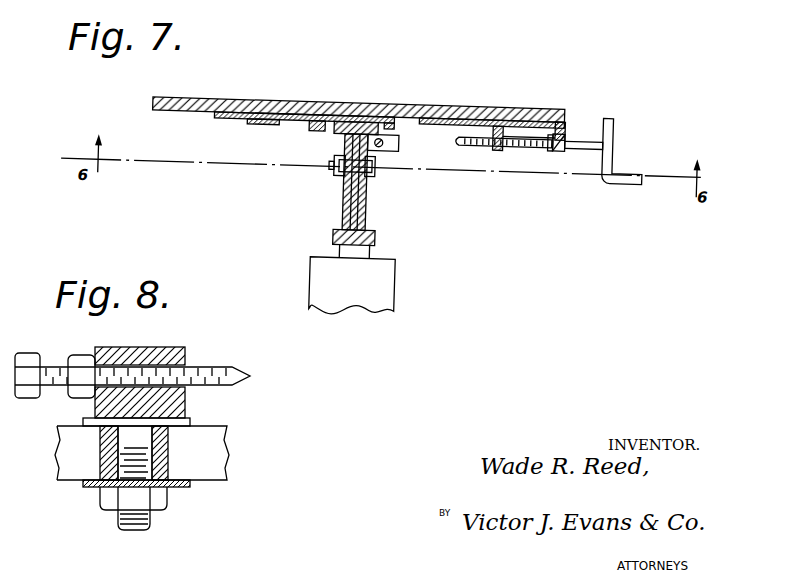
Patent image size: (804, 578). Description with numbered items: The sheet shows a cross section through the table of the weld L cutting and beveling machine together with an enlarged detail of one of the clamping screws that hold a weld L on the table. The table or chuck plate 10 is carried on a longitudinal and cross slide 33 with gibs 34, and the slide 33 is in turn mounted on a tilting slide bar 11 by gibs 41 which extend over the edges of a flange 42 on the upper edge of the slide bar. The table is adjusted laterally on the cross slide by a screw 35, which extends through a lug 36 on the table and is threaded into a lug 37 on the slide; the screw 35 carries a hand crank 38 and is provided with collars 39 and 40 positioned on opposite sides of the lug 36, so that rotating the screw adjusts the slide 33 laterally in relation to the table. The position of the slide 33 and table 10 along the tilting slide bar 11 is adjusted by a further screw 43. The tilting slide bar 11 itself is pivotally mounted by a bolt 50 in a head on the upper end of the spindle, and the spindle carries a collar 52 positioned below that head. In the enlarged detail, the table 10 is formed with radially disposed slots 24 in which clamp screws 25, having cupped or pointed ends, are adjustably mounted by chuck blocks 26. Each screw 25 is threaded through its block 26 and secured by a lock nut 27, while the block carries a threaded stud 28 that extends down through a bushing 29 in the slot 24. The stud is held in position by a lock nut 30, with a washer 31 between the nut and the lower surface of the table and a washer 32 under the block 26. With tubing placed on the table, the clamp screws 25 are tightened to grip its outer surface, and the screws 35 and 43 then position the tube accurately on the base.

In FIG. 7, the table or chuck plate 10 is at (433, 97).
In FIG. 8, the table or chuck plate 10 is at (213, 461).
In FIG. 7, the tilting slide bar 11 is at (369, 190).
In FIG. 7, the longitudinal and cross slide 33 is at (256, 116).
In FIG. 7, the gibs 34 is at (275, 121).
In FIG. 7, the gibs 41 is at (318, 126).
In FIG. 7, the flange 42 is at (338, 128).
In FIG. 7, the screw 43 is at (400, 134).
In FIG. 7, the bolt 50 is at (377, 160).
In FIG. 7, the collar 52 is at (375, 240).
In FIG. 7, the screw 35 is at (520, 137).
In FIG. 7, the lug 36 is at (563, 140).
In FIG. 7, the lug 37 is at (499, 140).
In FIG. 7, the hand crank 38 is at (614, 120).
In FIG. 7, the collar 39 is at (568, 110).
In FIG. 7, the collar 40 is at (549, 139).
In FIG. 8, the radially disposed slots 24 is at (72, 443).
In FIG. 8, the clamp screws 25 is at (215, 368).
In FIG. 8, the chuck blocks 26 is at (147, 355).
In FIG. 8, the lock nuts 27 is at (80, 356).
In FIG. 8, the threaded studs 28 is at (145, 440).
In FIG. 8, the bushings 29 is at (100, 462).
In FIG. 8, the lock nuts 30 is at (165, 505).
In FIG. 8, the washers 31 is at (88, 487).
In FIG. 8, the washers 32 is at (200, 422).